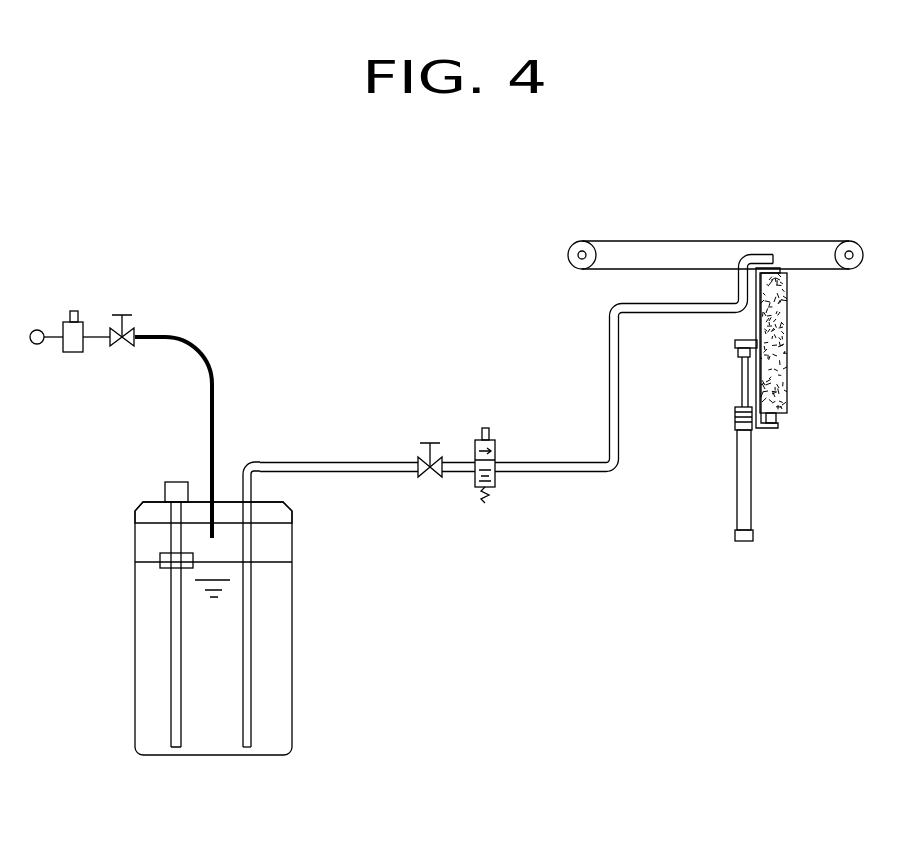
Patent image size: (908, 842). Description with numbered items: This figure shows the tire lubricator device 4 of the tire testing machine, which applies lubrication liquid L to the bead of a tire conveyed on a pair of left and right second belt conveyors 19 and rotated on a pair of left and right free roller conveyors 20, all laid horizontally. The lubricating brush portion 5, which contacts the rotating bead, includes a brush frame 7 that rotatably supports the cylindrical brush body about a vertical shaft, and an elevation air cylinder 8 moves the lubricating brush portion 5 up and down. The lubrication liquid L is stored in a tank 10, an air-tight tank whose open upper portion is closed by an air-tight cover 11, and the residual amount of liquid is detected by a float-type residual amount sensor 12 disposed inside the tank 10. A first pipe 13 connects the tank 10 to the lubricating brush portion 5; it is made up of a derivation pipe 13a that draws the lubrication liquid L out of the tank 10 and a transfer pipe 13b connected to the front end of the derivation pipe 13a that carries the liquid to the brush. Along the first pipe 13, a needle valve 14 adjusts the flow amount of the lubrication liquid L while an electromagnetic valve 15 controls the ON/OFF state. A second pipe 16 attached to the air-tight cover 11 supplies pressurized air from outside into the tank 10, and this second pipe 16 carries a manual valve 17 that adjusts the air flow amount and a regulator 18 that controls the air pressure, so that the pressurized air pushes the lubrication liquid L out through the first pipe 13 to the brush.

The tire lubricator device 4 is at (807, 404).
The lubricating brush portion 5 is at (787, 400).
The brush frame 7 is at (778, 425).
The elevation air cylinder 8 is at (843, 388).
The tank 10 is at (292, 592).
The air-tight cover 11 is at (292, 517).
The float-type residual amount sensor 12 is at (160, 558).
The first pipe 13 is at (500, 501).
The derivation pipe 13a is at (246, 462).
The transfer pipe 13b is at (516, 363).
The needle valve 14 is at (432, 480).
The electromagnetic valve 15 is at (475, 487).
The second pipe 16 is at (166, 337).
The manual valve 17 is at (125, 352).
The regulator 18 is at (72, 352).
The second belt conveyors 19 is at (715, 224).
The free roller conveyors 20 is at (810, 240).
The lubrication liquid L is at (278, 680).